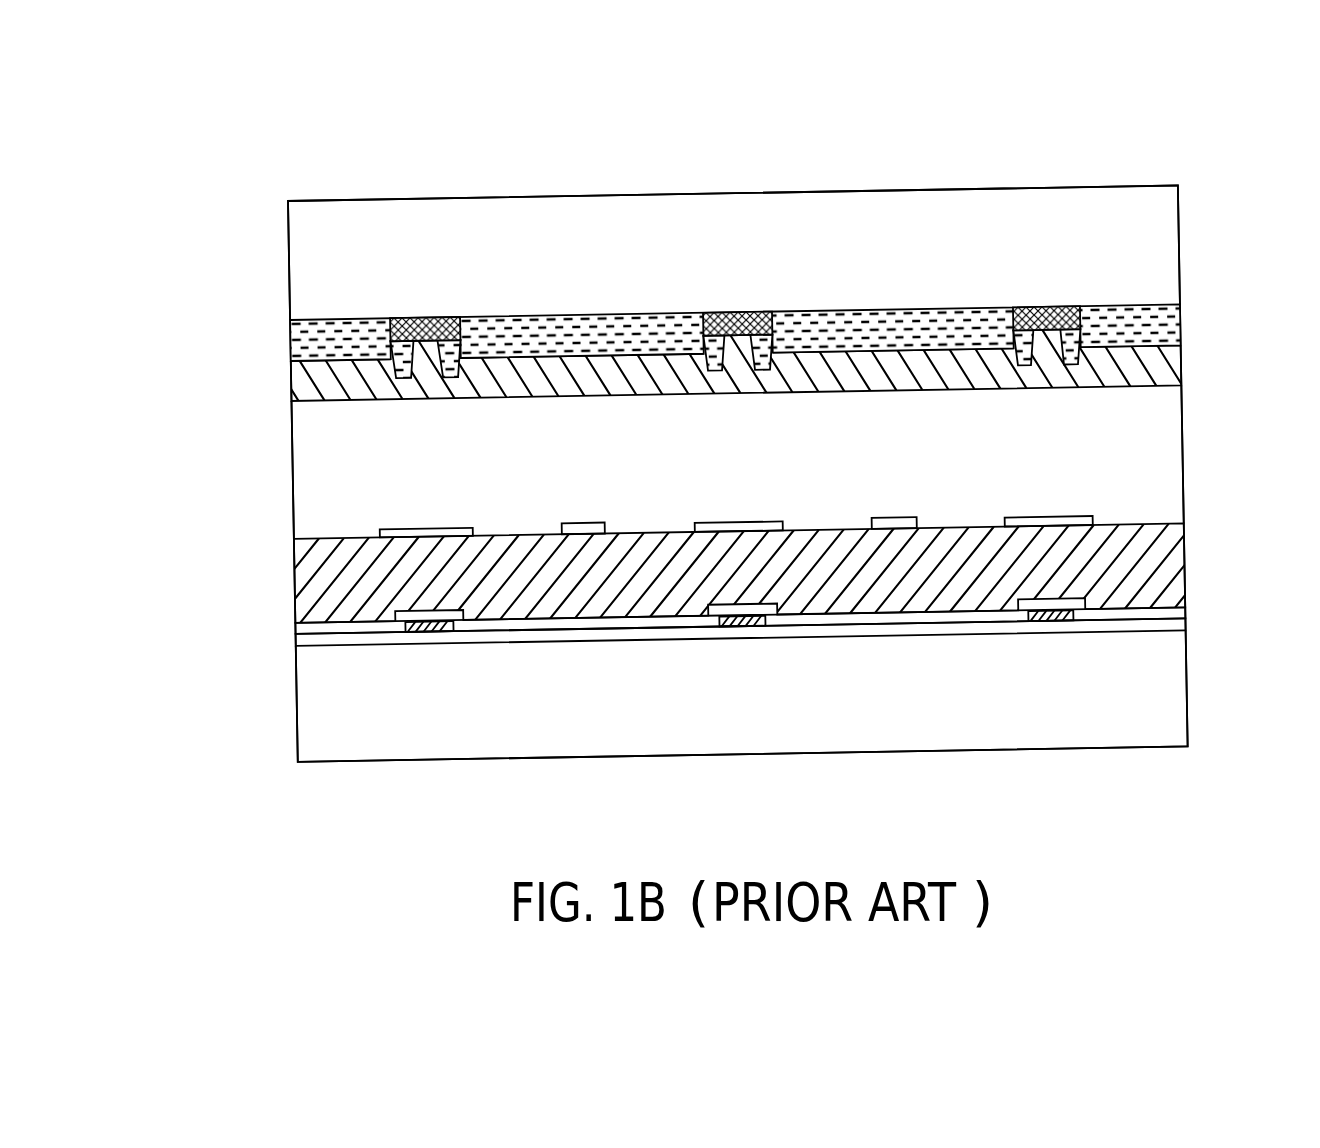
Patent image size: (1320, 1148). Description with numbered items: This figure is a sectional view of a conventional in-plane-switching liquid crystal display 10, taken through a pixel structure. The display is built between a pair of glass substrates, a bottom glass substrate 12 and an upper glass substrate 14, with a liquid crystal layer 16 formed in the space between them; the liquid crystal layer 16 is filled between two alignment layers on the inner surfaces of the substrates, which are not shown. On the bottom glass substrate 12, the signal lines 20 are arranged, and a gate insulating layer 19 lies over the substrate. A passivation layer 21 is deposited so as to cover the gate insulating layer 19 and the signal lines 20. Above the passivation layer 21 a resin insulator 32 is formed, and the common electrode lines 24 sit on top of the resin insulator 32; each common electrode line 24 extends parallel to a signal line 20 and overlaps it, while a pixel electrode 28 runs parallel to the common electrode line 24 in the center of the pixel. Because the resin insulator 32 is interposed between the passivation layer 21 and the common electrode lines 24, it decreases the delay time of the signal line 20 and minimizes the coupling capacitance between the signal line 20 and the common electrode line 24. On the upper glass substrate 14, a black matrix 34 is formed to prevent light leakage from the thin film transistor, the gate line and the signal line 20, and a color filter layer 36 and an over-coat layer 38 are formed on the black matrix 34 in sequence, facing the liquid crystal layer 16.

The liquid crystal display (prior art) 10 is at (1209, 159).
The glass substrate 12 is at (1157, 698).
The glass substrate 14 is at (1153, 247).
The liquid crystal layer 16 is at (1153, 452).
The gate insulating layer 19 is at (1163, 624).
The signal line 20 is at (426, 640).
The passivation layer 21 is at (1163, 611).
The common electrode line 24 is at (427, 527).
The pixel electrode 28 is at (583, 525).
The resin insulator 32 is at (1157, 560).
The black matrix 34 is at (417, 318).
The color filter layer 36 is at (333, 318).
The over-coat layer 38 is at (1153, 367).